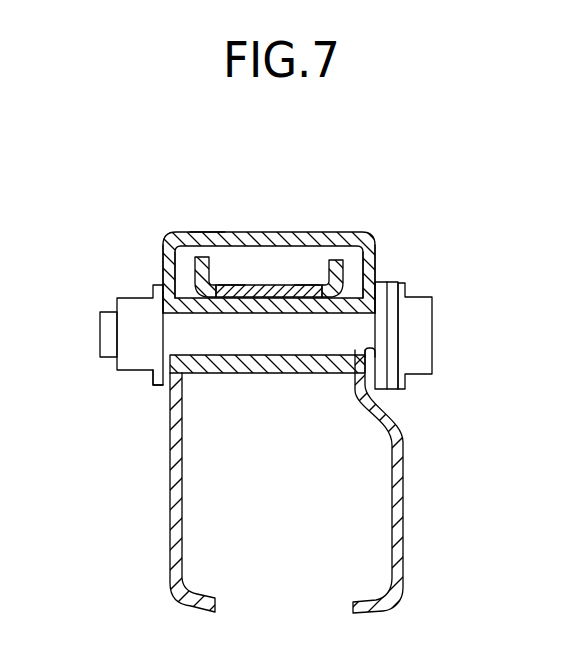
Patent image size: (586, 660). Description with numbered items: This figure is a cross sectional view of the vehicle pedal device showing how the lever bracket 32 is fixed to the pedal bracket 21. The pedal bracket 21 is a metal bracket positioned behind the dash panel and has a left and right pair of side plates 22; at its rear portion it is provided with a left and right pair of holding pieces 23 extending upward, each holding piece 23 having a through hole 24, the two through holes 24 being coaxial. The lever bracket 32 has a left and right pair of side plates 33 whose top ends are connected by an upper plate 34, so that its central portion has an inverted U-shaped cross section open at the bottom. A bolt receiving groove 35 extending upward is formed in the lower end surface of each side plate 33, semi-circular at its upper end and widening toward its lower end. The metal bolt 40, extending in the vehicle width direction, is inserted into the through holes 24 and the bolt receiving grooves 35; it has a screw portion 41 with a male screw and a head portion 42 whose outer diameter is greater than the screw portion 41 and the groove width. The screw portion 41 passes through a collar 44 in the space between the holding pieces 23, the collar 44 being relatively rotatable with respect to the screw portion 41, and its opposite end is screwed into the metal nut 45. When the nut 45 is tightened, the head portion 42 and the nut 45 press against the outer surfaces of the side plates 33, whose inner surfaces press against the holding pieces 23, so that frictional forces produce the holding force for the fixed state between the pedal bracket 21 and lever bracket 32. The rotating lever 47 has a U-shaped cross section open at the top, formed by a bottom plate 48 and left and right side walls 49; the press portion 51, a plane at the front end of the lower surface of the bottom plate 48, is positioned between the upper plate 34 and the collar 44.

The pedal bracket 21 is at (293, 420).
The side plates 22 is at (170, 520).
The holding pieces 23 is at (163, 265).
The through hole 24 is at (163, 350).
The lever bracket 32 is at (293, 385).
The side plates 33 is at (163, 247).
The upper plate 34 is at (208, 232).
The bolt receiving groove 35 is at (148, 330).
The bolt 40 is at (460, 336).
The head portion 42 is at (432, 332).
The screw portion 41 is at (293, 420).
The collar 44 is at (240, 360).
The nut 45 is at (127, 340).
The rotating lever 47 is at (293, 399).
The bottom plate 48 is at (312, 285).
The side walls 49 is at (199, 257).
The press portion 51 is at (230, 285).